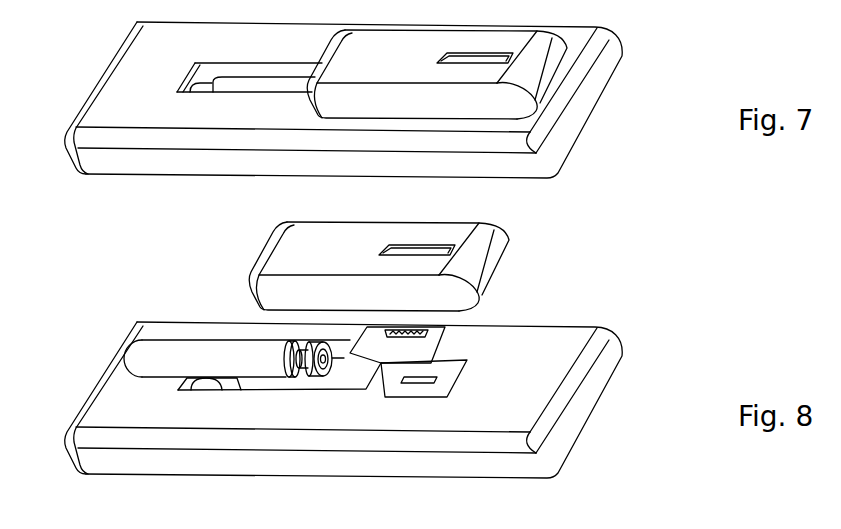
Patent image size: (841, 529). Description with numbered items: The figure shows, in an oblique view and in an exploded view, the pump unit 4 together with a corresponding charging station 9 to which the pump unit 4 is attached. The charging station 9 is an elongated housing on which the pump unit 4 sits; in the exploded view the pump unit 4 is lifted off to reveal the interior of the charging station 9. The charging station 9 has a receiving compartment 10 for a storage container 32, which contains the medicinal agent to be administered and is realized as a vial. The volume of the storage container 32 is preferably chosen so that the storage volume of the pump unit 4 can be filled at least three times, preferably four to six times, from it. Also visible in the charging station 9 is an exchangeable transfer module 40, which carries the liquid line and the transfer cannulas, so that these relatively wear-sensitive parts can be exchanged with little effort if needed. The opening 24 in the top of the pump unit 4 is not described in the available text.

In FIG. 7, the pump unit 4 is at (486, 59).
In FIG. 8, the pump unit 4 is at (401, 246).
In FIG. 7, the charging station 9 is at (608, 66).
In FIG. 8, the charging station 9 is at (608, 362).
In FIG. 7, the receiving compartment 10 is at (203, 87).
In FIG. 8, the receiving compartment 10 is at (203, 383).
In FIG. 7, the slot in slider 24 is at (512, 56).
In FIG. 8, the slot in slider 24 is at (435, 252).
In FIG. 7, the storage container 32 is at (268, 85).
In FIG. 8, the storage container 32 is at (208, 352).
In FIG. 8, the transfer module 40 is at (438, 340).